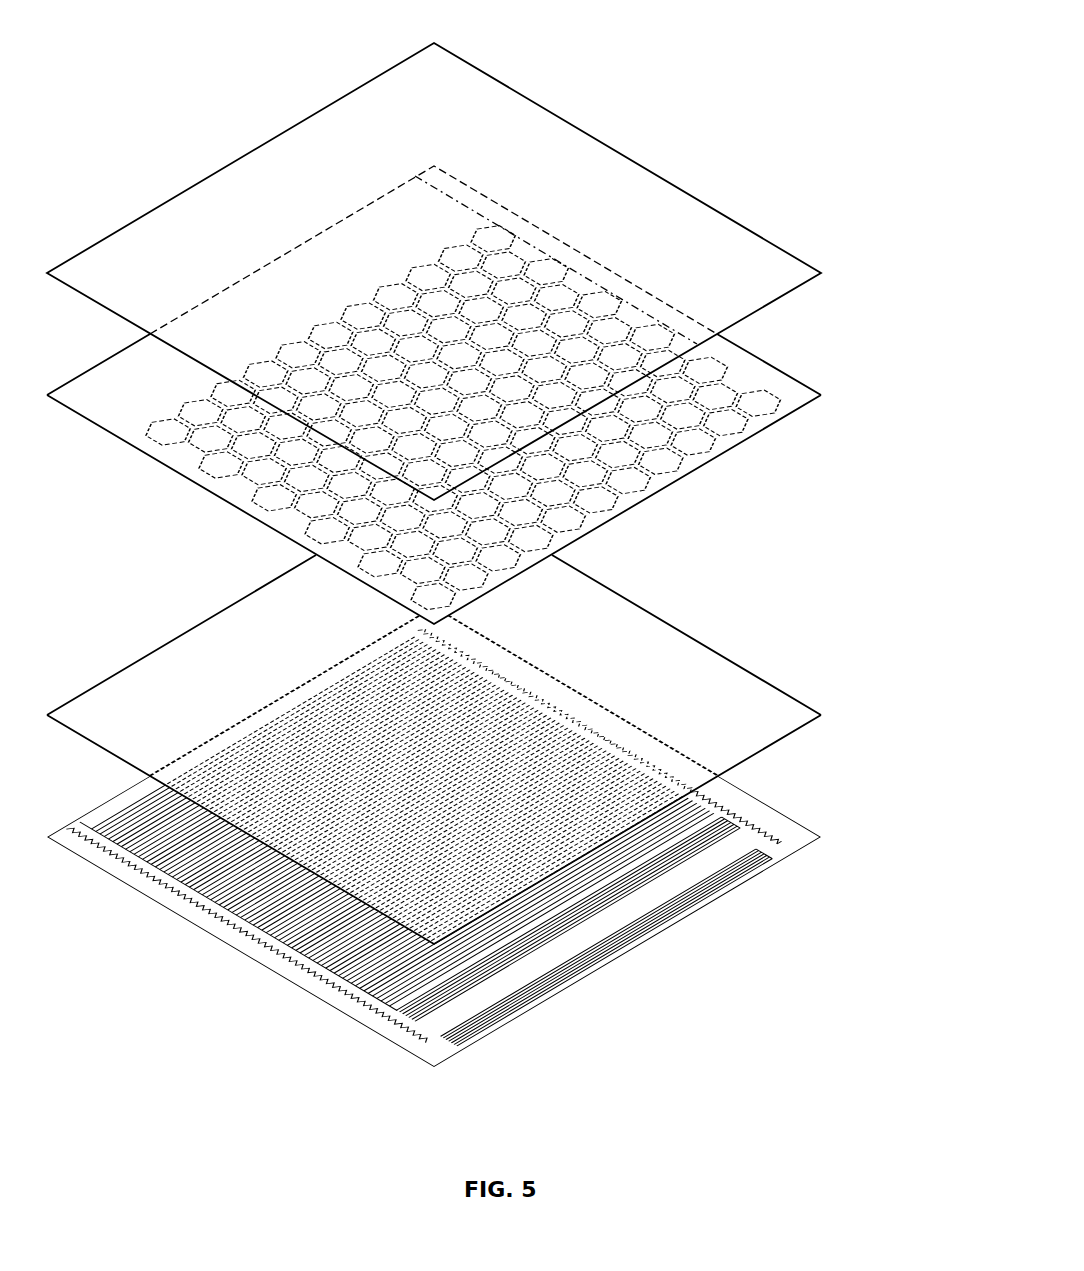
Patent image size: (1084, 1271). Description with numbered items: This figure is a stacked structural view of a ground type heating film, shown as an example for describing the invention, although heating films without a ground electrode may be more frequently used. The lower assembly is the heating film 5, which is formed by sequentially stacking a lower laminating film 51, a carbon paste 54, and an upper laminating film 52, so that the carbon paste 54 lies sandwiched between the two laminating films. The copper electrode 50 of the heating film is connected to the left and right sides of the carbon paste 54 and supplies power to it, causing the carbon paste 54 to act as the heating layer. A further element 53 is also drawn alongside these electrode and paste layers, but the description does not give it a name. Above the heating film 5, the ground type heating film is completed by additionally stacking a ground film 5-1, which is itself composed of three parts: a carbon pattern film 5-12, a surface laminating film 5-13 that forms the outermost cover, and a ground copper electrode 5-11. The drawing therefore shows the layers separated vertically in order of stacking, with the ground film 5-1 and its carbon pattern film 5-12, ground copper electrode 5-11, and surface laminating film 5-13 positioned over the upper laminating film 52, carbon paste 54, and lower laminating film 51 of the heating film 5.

The heating film 5 is at (473, 811).
The copper electrode 50 is at (752, 807).
The lower laminating film 51 is at (798, 830).
The upper laminating film 52 is at (785, 738).
The first connection electrode 53 is at (745, 838).
The carbon paste 54 is at (656, 947).
The ground film 5-1 is at (500, 333).
The ground copper electrode 5-11 is at (778, 377).
The carbon pattern film 5-12 is at (793, 413).
The surface laminating film 5-13 is at (783, 293).